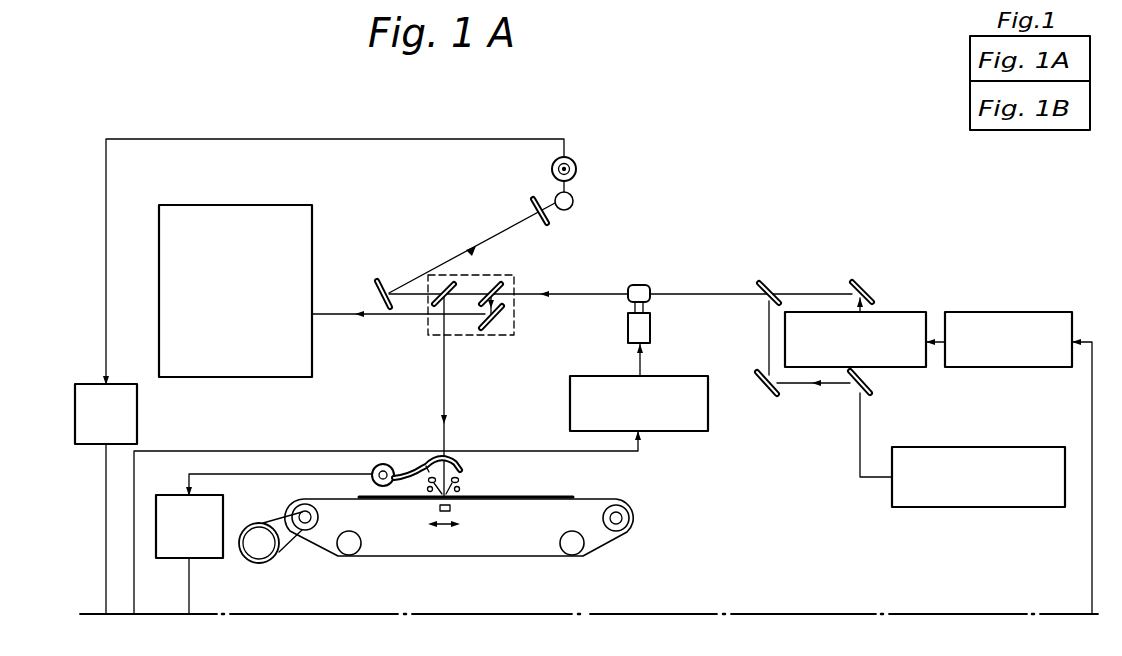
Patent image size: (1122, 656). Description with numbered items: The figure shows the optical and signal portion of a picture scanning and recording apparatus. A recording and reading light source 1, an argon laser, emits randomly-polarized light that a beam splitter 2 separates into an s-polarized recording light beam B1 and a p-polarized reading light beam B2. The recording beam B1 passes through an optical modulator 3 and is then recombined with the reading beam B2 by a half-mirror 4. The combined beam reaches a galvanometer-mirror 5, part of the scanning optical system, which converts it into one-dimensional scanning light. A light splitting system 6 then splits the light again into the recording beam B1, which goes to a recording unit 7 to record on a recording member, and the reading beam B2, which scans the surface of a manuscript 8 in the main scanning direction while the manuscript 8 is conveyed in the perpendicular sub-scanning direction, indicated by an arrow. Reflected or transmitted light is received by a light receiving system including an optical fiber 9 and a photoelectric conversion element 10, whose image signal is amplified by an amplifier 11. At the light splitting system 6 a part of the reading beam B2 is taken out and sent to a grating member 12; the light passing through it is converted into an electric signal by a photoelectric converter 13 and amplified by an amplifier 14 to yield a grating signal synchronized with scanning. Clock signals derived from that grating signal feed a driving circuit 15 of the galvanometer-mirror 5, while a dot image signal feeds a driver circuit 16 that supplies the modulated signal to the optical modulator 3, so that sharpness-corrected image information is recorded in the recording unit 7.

The recording and reading light source 1 is at (1033, 447).
The beam splitter 2 is at (868, 392).
The optical modulator 3 is at (906, 312).
The half-mirror 4 is at (770, 283).
The galvanometer-mirror 5 is at (643, 285).
The light splitting system 6 is at (433, 336).
The recording unit 7 is at (271, 206).
The manuscript 8 is at (505, 495).
The optical fiber 9 is at (420, 462).
The photoelectric conversion element 10 is at (373, 466).
The amplifier 11 is at (212, 558).
The grating member 12 is at (533, 200).
The photoelectric converter 13 is at (578, 170).
The amplifier 14 is at (90, 384).
The driving circuit 15 is at (592, 376).
The driver circuit 16 is at (1031, 312).
The recording light beam B1 is at (386, 318).
The reading light beam B2 is at (470, 294).